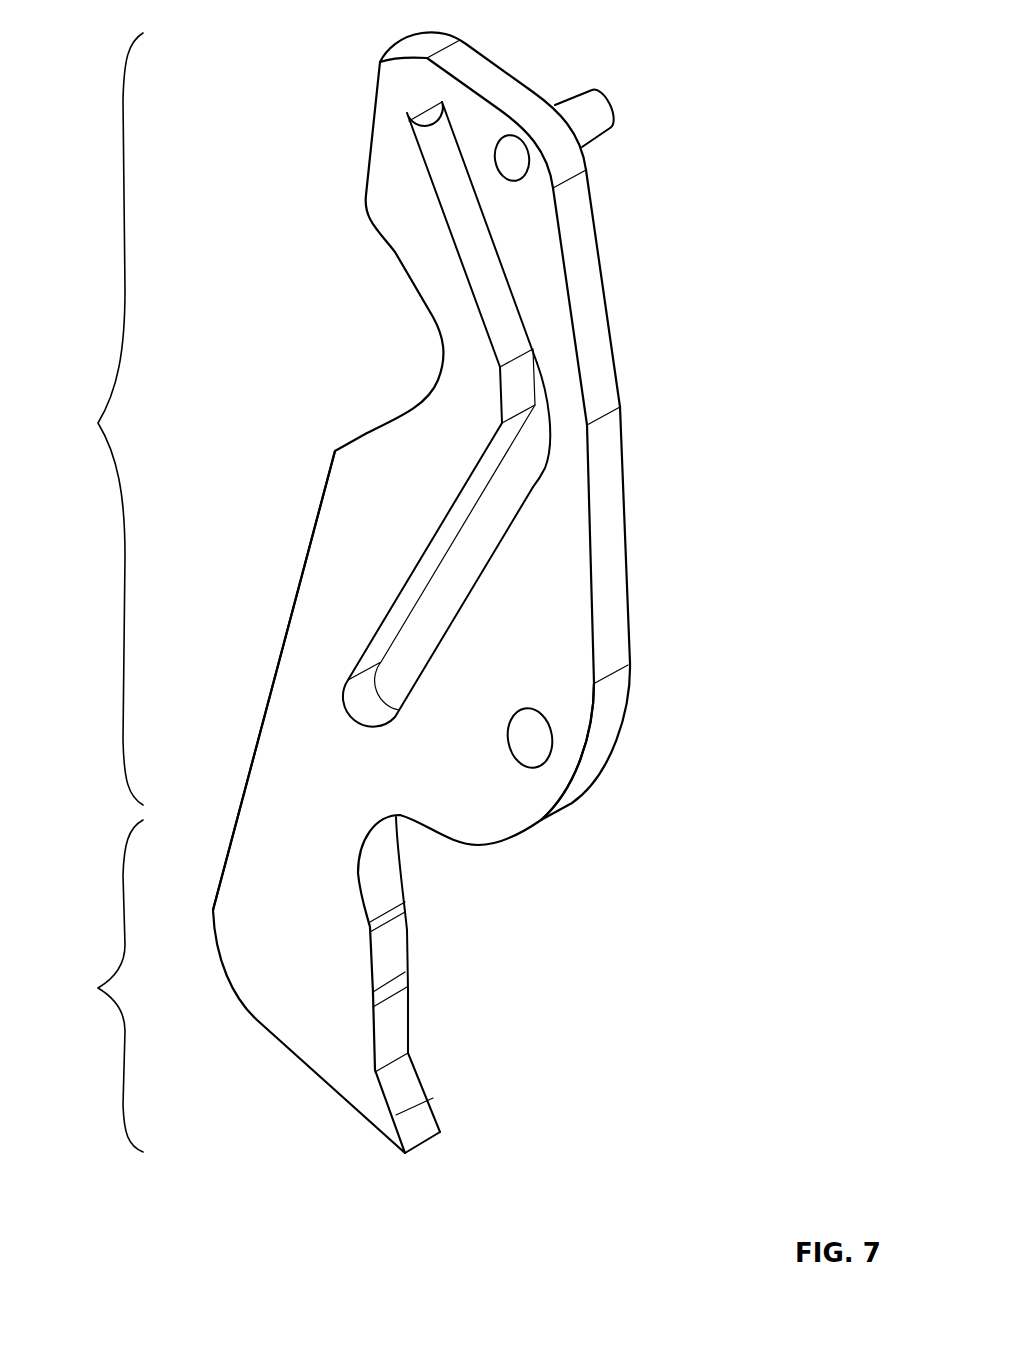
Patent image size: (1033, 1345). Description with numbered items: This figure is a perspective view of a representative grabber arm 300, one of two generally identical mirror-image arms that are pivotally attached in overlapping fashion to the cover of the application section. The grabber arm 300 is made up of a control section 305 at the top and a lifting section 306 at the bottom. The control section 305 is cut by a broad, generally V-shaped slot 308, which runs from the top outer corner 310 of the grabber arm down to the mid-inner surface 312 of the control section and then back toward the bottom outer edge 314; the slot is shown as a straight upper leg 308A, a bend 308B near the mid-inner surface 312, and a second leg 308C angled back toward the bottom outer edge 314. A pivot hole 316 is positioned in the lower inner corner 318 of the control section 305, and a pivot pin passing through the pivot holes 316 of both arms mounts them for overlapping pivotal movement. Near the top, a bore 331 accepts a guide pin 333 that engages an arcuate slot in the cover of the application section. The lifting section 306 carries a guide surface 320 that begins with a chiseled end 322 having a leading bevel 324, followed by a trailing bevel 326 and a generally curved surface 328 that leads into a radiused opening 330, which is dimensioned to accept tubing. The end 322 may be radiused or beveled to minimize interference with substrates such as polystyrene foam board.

The grabber arm 300 is at (723, 560).
The control section 305 is at (90, 419).
The lifting section 306 is at (90, 986).
The V-shaped slot 308 is at (487, 414).
The first portion of V-shaped slot 308A is at (463, 209).
The bend of V-shaped slot 308B is at (540, 375).
The second portion of V-shaped slot 308C is at (442, 584).
The top outer corner 310 is at (394, 67).
The mid-inner surface 312 is at (656, 412).
The bottom outer edge 314 is at (276, 680).
The pivot hole 316 is at (530, 738).
The lower inner corner 318 is at (563, 718).
The guide surface 320 is at (536, 1015).
The chiseled end 322 is at (430, 1161).
The leading bevel 324 is at (418, 1124).
The trailing bevel 326 is at (400, 1070).
The curved surface 328 is at (398, 982).
The radiused opening 330 is at (397, 867).
The bore 331 is at (512, 152).
The guide pin 333 is at (602, 115).